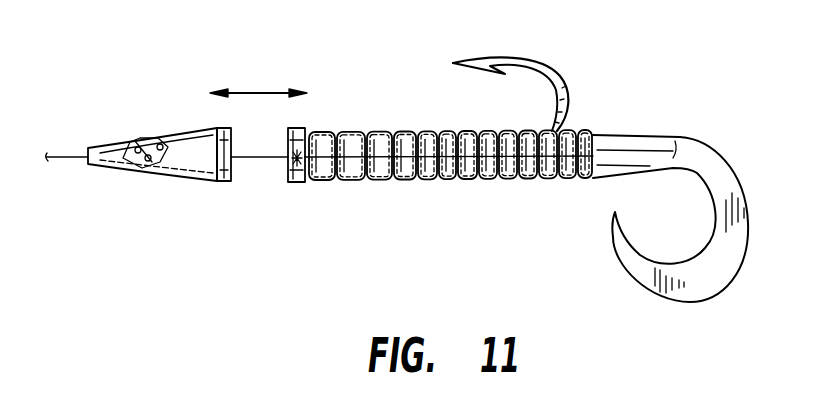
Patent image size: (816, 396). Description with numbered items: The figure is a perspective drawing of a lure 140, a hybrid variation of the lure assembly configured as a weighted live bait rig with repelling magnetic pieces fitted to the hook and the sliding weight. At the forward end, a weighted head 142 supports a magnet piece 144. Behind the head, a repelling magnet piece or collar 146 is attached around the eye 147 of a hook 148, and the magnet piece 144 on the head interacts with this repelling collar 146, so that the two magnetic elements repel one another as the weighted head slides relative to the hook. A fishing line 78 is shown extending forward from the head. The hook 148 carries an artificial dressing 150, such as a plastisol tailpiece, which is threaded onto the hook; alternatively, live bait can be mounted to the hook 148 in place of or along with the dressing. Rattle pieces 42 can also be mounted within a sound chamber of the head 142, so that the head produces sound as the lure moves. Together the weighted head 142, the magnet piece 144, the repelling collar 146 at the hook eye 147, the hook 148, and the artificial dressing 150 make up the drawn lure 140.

The lure 140 is at (128, 75).
The rattle pieces 42 is at (150, 137).
The fishing line 78 is at (70, 162).
The weighted head 142 is at (152, 181).
The magnet piece 144 is at (228, 183).
The repelling magnet piece or collar 146 is at (302, 128).
The eye 147 is at (298, 183).
The hook 148 is at (565, 90).
The artificial dressing 150 is at (377, 179).